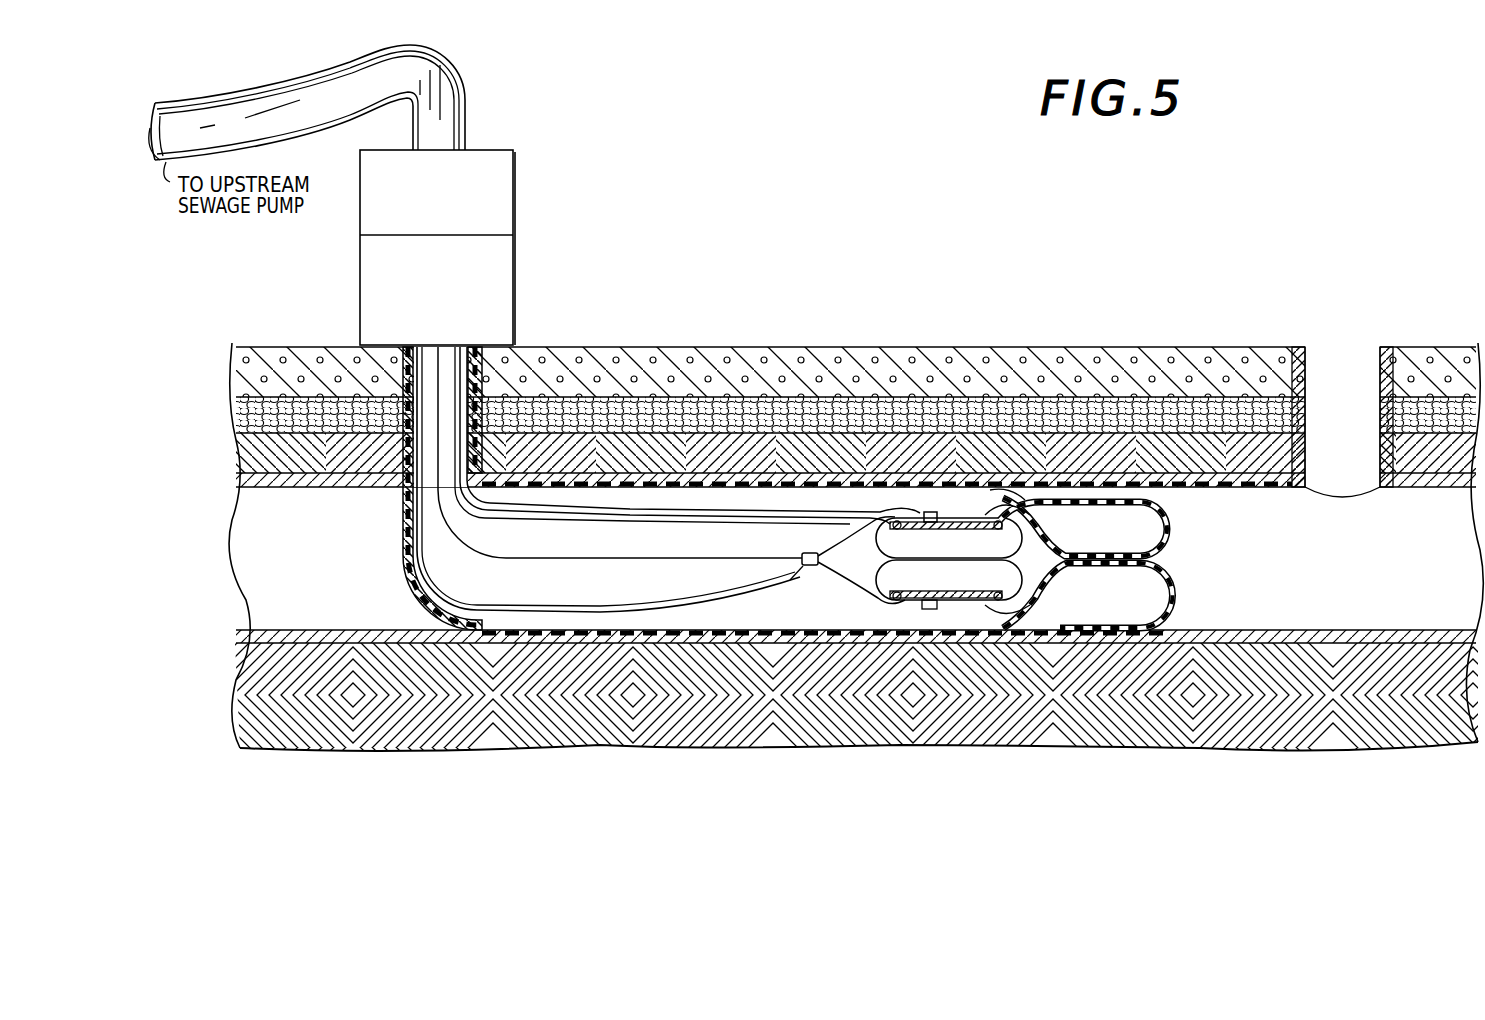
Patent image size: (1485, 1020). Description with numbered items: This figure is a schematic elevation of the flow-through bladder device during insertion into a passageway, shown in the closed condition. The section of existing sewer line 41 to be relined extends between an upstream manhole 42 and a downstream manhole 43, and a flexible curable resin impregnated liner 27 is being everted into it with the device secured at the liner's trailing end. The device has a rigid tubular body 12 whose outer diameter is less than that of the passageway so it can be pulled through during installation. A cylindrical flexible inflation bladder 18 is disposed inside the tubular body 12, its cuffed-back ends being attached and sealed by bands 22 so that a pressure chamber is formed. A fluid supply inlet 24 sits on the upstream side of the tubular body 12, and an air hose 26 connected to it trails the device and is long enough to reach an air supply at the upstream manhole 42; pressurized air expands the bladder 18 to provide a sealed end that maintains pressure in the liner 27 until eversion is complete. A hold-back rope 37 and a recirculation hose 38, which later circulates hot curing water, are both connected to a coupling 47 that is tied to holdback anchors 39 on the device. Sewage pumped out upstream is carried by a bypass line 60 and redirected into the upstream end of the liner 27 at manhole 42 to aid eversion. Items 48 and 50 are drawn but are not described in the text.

The tubular body 12 is at (1030, 505).
The inflation bladder 18 is at (1028, 584).
The bands 22 is at (880, 608).
The fluid supply inlet 24 is at (929, 512).
The air hose 26 is at (688, 522).
The liner 27 is at (665, 493).
The hold-back rope 37 is at (742, 562).
The recirculation hose 38 is at (646, 607).
The holdback anchors 39 is at (958, 601).
The sewer line 41 is at (725, 490).
The upstream manhole 42 is at (420, 423).
The downstream manhole 43 is at (1362, 345).
The coupling 47 is at (805, 552).
The upper bag wall 48 is at (862, 538).
The trench cavity 50 is at (252, 583).
The bypass line 60 is at (357, 62).